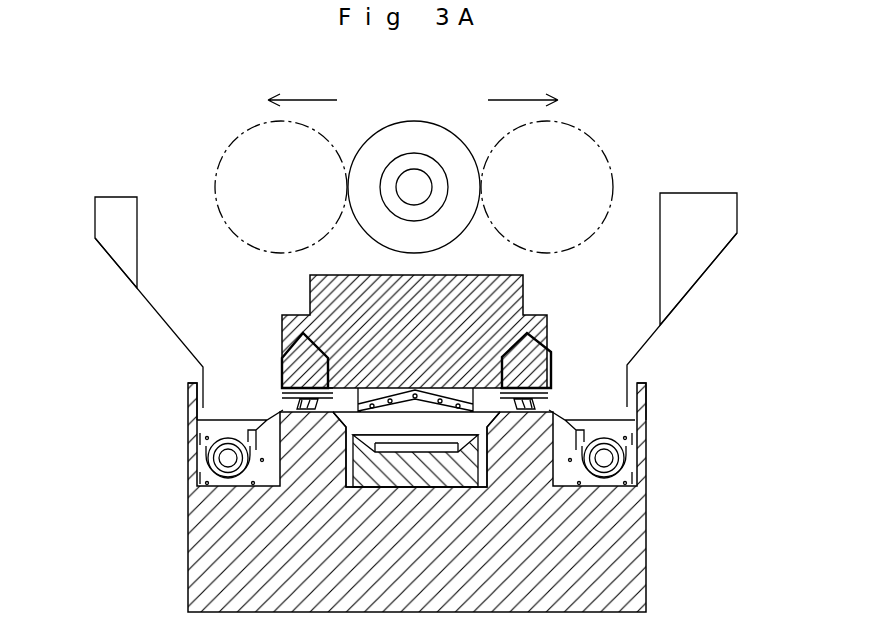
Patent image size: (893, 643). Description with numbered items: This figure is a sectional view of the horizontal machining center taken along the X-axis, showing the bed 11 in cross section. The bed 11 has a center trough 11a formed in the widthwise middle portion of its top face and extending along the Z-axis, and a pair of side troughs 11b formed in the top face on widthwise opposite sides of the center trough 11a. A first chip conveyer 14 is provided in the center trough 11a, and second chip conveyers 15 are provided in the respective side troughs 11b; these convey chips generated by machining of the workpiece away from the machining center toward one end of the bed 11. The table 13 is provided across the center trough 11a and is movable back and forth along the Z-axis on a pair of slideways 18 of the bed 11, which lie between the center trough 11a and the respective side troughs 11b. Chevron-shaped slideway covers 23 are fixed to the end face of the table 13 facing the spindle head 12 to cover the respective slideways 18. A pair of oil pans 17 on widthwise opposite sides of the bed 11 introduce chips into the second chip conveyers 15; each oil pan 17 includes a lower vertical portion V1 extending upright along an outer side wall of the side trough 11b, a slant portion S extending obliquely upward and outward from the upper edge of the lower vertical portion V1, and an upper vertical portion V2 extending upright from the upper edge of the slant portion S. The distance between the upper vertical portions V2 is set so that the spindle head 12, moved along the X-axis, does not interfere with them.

The bed 11 is at (207, 552).
The center trough 11a is at (383, 421).
The side troughs 11b is at (200, 477).
The spindle head 12 is at (243, 128).
The table 13 is at (513, 297).
The first chip conveyer 14 is at (458, 477).
The second chip conveyers 15 is at (208, 450).
The oil pans 17 is at (112, 276).
The slideways 18 is at (283, 383).
The slideway covers 23 is at (286, 352).
The lower vertical portion V1 is at (189, 390).
The upper vertical portion V2 is at (95, 218).
The slant portion S is at (164, 323).